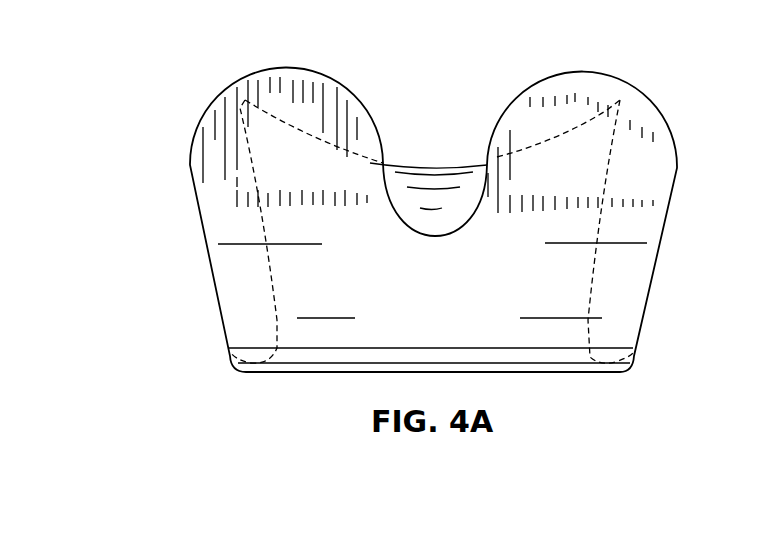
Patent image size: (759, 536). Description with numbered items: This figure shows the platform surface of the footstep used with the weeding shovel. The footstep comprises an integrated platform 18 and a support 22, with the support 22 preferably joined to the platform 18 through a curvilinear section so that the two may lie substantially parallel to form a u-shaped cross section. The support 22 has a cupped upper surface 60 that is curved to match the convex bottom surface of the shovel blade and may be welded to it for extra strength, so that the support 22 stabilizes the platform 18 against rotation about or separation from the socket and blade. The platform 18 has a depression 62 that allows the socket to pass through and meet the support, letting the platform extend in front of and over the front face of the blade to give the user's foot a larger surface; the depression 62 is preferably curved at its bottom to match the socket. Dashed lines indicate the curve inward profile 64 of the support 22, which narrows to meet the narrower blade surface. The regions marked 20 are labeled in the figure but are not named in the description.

The cushion body 18 is at (190, 150).
The body sections 20 is at (279, 181).
The seams 22 is at (237, 207).
The fabric cover 60 is at (302, 132).
The central recess 62 is at (433, 240).
The inner liner 64 is at (280, 315).